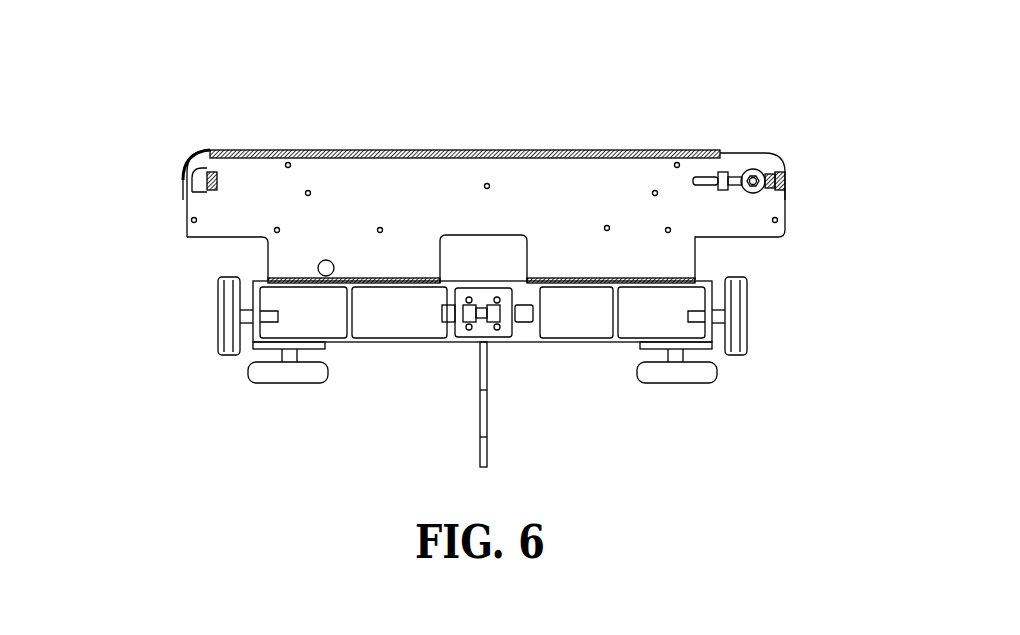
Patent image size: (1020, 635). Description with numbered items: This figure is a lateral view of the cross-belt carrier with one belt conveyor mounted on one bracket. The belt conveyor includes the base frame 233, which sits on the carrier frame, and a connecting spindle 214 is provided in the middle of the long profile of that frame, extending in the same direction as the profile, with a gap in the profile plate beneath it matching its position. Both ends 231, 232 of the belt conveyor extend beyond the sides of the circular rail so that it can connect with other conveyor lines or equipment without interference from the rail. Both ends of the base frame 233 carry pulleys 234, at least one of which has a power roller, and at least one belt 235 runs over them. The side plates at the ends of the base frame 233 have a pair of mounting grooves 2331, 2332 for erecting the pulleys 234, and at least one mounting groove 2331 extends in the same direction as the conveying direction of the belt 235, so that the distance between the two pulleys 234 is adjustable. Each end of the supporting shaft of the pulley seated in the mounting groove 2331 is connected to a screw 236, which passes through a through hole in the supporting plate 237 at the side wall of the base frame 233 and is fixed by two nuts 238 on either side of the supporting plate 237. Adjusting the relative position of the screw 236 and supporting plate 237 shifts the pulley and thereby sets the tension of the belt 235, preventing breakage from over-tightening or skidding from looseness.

The connecting spindle 214 is at (530, 314).
The end of belt conveyor 231 is at (778, 172).
The end of belt conveyor 232 is at (184, 158).
The base frame 233 is at (440, 178).
The pulley 234 is at (205, 150).
The belt 235 is at (550, 148).
The screw 236 is at (745, 172).
The supporting plate 237 is at (718, 172).
The nut 238 is at (720, 190).
The mounting groove 2331 is at (786, 192).
The mounting groove 2332 is at (186, 200).